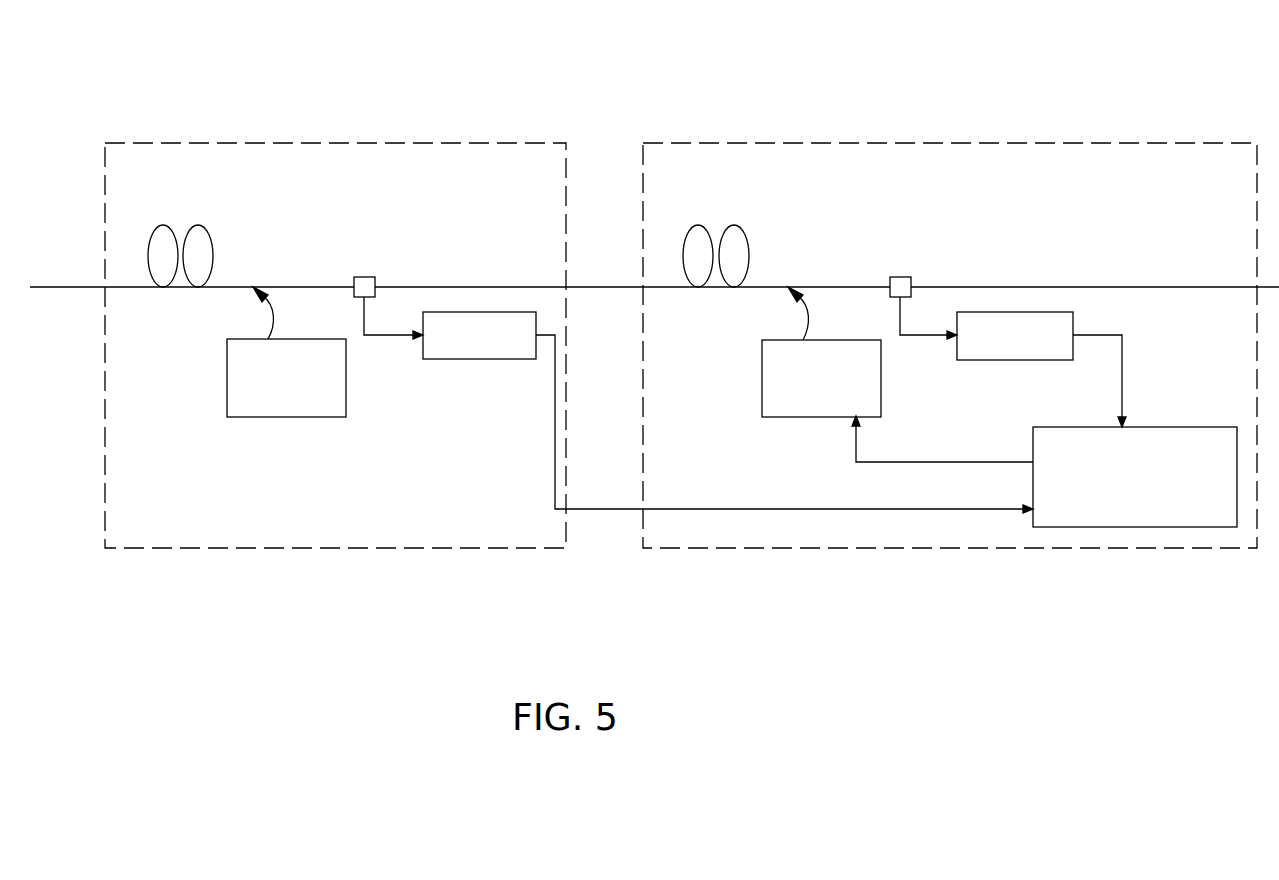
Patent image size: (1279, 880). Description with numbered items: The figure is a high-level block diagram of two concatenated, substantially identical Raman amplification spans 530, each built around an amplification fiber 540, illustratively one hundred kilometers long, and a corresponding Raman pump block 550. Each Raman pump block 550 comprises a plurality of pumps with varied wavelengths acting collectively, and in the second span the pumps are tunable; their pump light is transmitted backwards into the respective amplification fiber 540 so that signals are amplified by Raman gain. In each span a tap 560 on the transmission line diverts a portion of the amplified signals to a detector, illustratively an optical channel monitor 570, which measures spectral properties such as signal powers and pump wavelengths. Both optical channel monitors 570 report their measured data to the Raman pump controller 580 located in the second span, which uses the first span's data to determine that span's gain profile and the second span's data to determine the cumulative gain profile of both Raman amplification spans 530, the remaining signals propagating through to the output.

The Raman amplification span 530 is at (191, 142).
The amplification fiber 540 is at (175, 221).
The Raman pump block 550 is at (253, 417).
The tap 560 is at (368, 277).
The optical channel monitor (OMON) 570 is at (465, 359).
The Raman pump controller 580 is at (1177, 425).